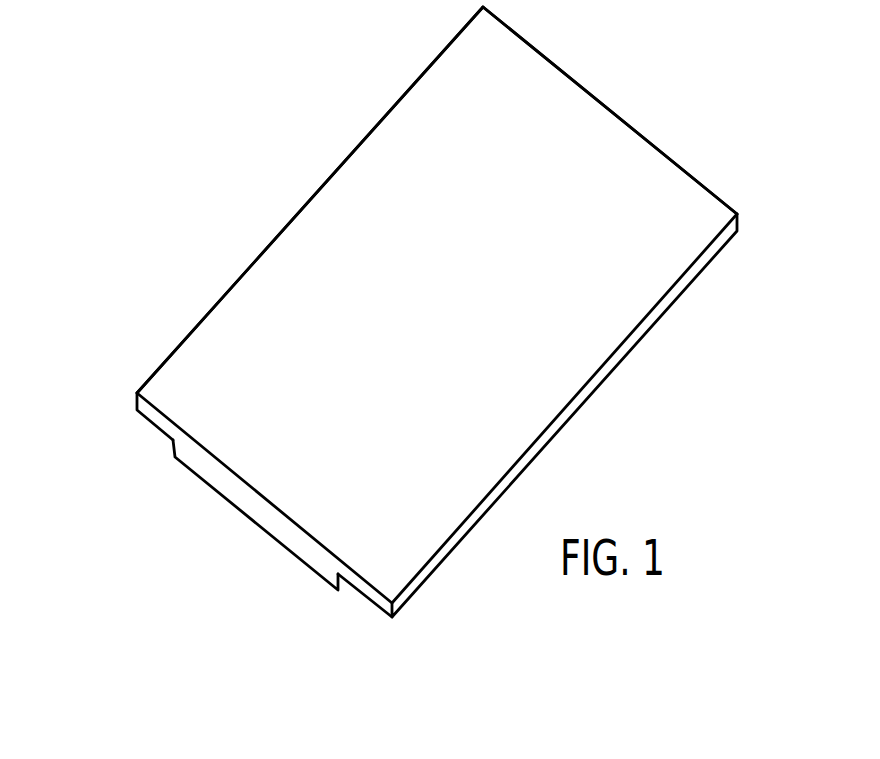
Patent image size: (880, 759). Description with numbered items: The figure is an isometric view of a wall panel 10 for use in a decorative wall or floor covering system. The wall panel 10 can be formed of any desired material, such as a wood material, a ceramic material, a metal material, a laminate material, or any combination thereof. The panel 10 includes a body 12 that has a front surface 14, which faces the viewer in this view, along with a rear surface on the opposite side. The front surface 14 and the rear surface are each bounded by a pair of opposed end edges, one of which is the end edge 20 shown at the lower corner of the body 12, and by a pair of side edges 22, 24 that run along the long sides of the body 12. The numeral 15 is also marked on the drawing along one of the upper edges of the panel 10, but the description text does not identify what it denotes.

The wall panel 10 is at (432, 352).
The body 12 is at (204, 496).
The front surface 14 is at (270, 303).
The second side edge 15 is at (549, 56).
The end edge 20 is at (367, 590).
The side edge 22 is at (307, 198).
The side edge 24 is at (605, 372).